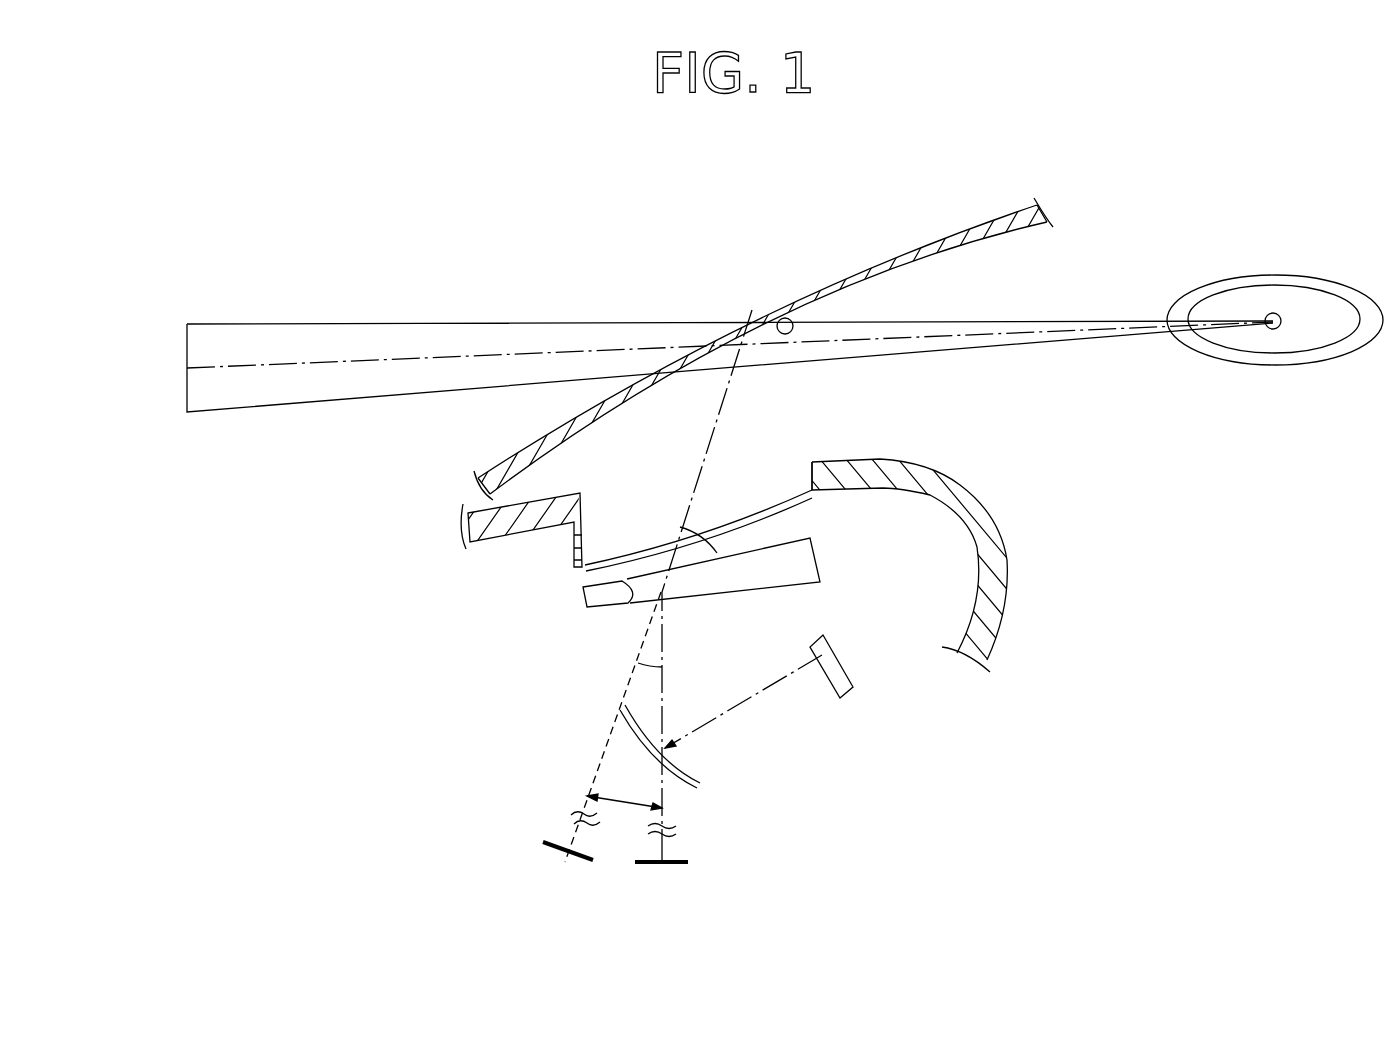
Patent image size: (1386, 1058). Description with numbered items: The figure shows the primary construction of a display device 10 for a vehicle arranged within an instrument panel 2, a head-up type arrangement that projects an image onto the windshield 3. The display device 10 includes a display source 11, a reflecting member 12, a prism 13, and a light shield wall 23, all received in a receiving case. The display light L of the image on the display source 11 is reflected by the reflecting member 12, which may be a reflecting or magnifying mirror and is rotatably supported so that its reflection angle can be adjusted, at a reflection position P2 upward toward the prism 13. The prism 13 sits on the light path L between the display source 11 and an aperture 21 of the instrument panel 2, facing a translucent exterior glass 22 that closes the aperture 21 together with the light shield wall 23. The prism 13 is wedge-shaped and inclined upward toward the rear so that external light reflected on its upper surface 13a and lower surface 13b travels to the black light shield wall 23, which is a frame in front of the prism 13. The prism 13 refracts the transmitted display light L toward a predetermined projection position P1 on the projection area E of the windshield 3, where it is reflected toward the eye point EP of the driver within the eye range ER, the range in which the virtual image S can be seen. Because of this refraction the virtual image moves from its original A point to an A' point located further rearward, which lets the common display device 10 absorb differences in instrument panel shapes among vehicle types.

The instrument panel 2 is at (956, 535).
The windshield 3 is at (935, 235).
The display device 10 is at (880, 864).
The display source 11 is at (848, 697).
The reflecting member 12 is at (638, 735).
The prism 13 is at (692, 604).
The upper surface 13a is at (636, 577).
The lower surface 13b is at (773, 592).
The aperture 21 is at (810, 458).
The exterior glass 22 is at (790, 515).
The light shield wall 23 is at (572, 542).
The virtual image S is at (187, 346).
The projection area E is at (780, 318).
The projection position P1 is at (727, 323).
The reflection position P2 is at (663, 752).
The eye range ER is at (1259, 275).
The eye point EP is at (1281, 316).
The display light L is at (763, 703).
The A point A is at (611, 790).
The A' point A' is at (682, 808).